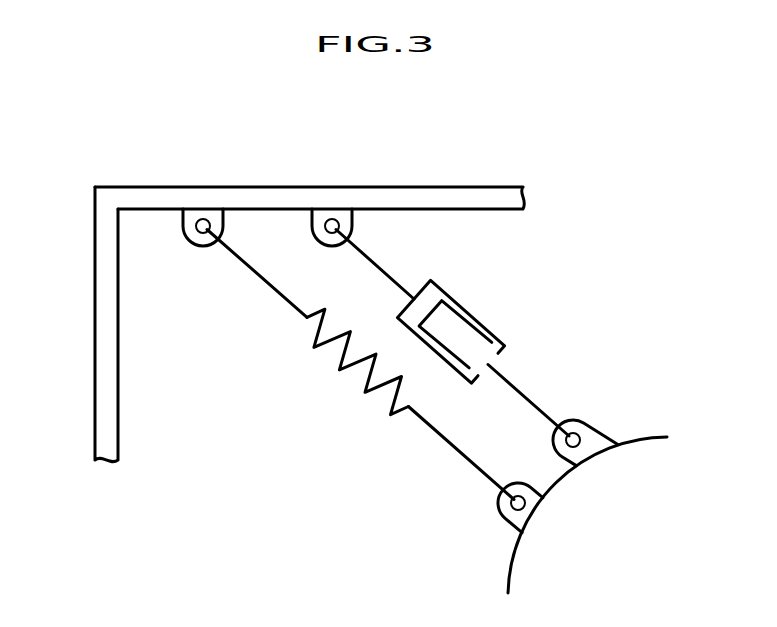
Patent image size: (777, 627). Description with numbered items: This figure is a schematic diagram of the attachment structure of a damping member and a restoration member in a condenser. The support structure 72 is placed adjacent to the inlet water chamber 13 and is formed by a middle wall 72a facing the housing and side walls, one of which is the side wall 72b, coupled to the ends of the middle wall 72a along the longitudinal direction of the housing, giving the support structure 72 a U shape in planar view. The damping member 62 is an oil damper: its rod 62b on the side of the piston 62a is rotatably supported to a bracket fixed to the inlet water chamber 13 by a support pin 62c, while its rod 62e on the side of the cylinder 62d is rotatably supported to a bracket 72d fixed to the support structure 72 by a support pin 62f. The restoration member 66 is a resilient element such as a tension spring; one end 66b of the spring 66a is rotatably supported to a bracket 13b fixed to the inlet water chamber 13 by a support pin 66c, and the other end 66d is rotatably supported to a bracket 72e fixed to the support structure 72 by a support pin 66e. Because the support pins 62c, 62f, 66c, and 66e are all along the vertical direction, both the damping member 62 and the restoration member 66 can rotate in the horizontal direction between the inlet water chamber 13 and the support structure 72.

The inlet water chamber 13 is at (570, 479).
The bracket 13b is at (600, 440).
The damping member 62 is at (465, 317).
The piston 62a is at (438, 300).
The rod 62b is at (540, 403).
The support pin 62c is at (590, 457).
The cylinder 62d is at (490, 330).
The rod 62e is at (370, 257).
The support pin 62f is at (330, 220).
The restoration member 66 is at (338, 328).
The spring 66a is at (327, 350).
The one end 66b is at (470, 465).
The support pin 66c is at (507, 512).
The other end 66d is at (257, 282).
The support pin 66e is at (202, 218).
The support structure 72 is at (274, 291).
The middle wall 72a is at (108, 337).
The side wall 72b is at (500, 200).
The bracket 72d is at (345, 214).
The bracket 72e is at (217, 214).